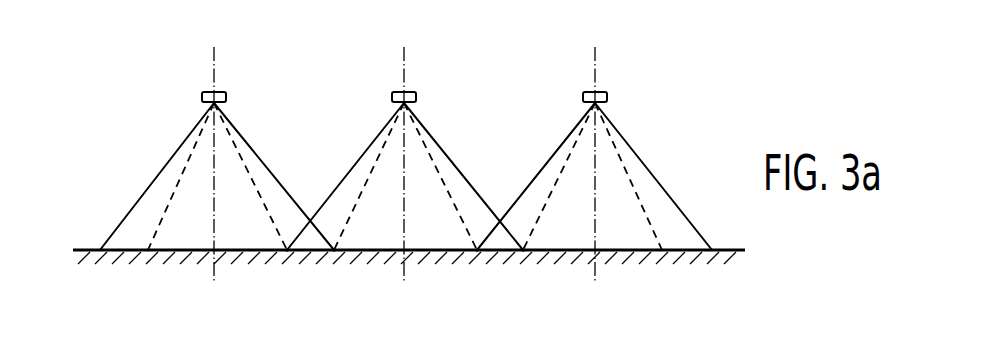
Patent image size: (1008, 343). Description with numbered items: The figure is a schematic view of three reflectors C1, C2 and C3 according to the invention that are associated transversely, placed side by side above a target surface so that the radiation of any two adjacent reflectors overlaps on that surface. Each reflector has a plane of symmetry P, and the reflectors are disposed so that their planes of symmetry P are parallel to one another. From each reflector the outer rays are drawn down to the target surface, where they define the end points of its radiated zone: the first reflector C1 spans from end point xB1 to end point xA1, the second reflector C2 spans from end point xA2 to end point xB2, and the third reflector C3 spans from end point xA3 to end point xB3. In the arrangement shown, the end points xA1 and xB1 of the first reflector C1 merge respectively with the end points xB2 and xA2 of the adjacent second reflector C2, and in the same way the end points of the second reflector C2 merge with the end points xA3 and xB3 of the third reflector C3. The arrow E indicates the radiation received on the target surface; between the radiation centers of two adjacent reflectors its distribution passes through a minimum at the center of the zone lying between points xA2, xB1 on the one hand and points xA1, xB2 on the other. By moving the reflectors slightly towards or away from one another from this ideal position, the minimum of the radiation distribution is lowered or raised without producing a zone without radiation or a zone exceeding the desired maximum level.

The plane of symmetry P is at (214, 64).
The reflector C1 is at (217, 157).
The reflector C2 is at (405, 157).
The reflector C3 is at (594, 157).
The end point xA1 is at (332, 256).
The end point xB1 is at (285, 256).
The end point xA2 is at (287, 256).
The end point xB2 is at (336, 256).
The end point xA3 is at (478, 256).
The end point xB3 is at (526, 256).
The radiation level E is at (61, 342).